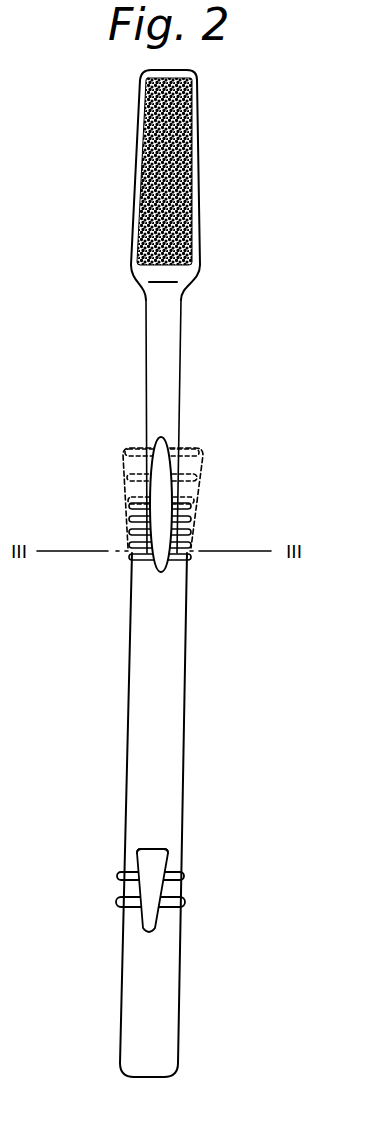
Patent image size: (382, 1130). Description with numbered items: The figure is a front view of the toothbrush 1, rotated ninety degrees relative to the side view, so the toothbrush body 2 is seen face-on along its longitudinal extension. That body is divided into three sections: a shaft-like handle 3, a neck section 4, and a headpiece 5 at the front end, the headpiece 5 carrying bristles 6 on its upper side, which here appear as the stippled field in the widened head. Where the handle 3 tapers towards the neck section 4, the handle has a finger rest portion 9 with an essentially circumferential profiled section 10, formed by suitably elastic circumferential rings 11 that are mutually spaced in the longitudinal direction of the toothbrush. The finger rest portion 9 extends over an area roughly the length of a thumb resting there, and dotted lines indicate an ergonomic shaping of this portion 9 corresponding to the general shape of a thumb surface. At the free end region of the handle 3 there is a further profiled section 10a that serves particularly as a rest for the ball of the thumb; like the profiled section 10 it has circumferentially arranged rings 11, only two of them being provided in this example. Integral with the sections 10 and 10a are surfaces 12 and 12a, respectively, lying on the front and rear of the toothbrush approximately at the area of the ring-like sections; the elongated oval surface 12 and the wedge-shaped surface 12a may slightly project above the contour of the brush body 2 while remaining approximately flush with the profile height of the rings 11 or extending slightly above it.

The toothbrush 1 is at (140, 311).
The toothbrush body 2 is at (166, 658).
The handle 3 is at (151, 740).
The neck section 4 is at (190, 343).
The headpiece 5 is at (120, 173).
The bristles 6 is at (175, 197).
The finger rest portion 9 is at (207, 497).
The profiled section 10 is at (188, 463).
The rings 11 is at (143, 507).
The surface 12 is at (166, 566).
The further profiled section 10a is at (178, 861).
The surface 12a is at (157, 870).